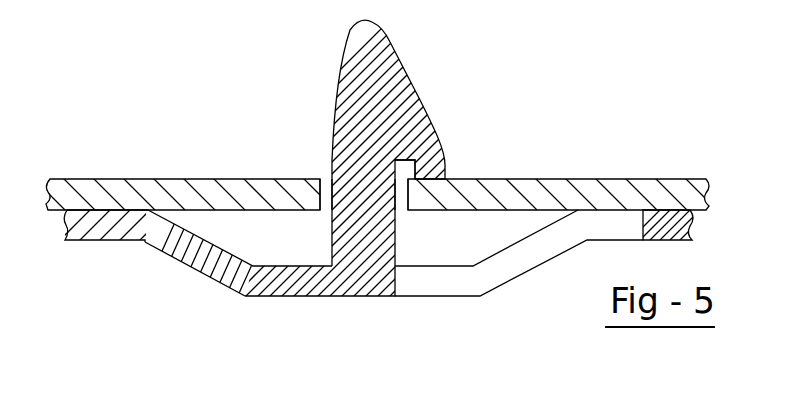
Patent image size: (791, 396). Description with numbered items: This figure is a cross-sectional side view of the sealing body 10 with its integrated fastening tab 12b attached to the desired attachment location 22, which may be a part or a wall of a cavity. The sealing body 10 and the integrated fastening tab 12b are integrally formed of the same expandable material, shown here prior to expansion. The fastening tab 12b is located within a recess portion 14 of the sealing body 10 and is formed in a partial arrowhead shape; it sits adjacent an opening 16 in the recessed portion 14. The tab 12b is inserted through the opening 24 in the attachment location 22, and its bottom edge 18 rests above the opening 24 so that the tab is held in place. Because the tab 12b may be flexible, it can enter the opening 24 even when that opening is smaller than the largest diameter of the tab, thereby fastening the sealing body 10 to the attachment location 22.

The sealing body 10 is at (92, 243).
The integrated fastening tab 12b is at (385, 55).
The recess portion 14 is at (301, 252).
The opening 16 is at (513, 262).
The bottom edge 18 is at (403, 170).
The attachment location 22 is at (549, 182).
The opening 24 is at (331, 170).